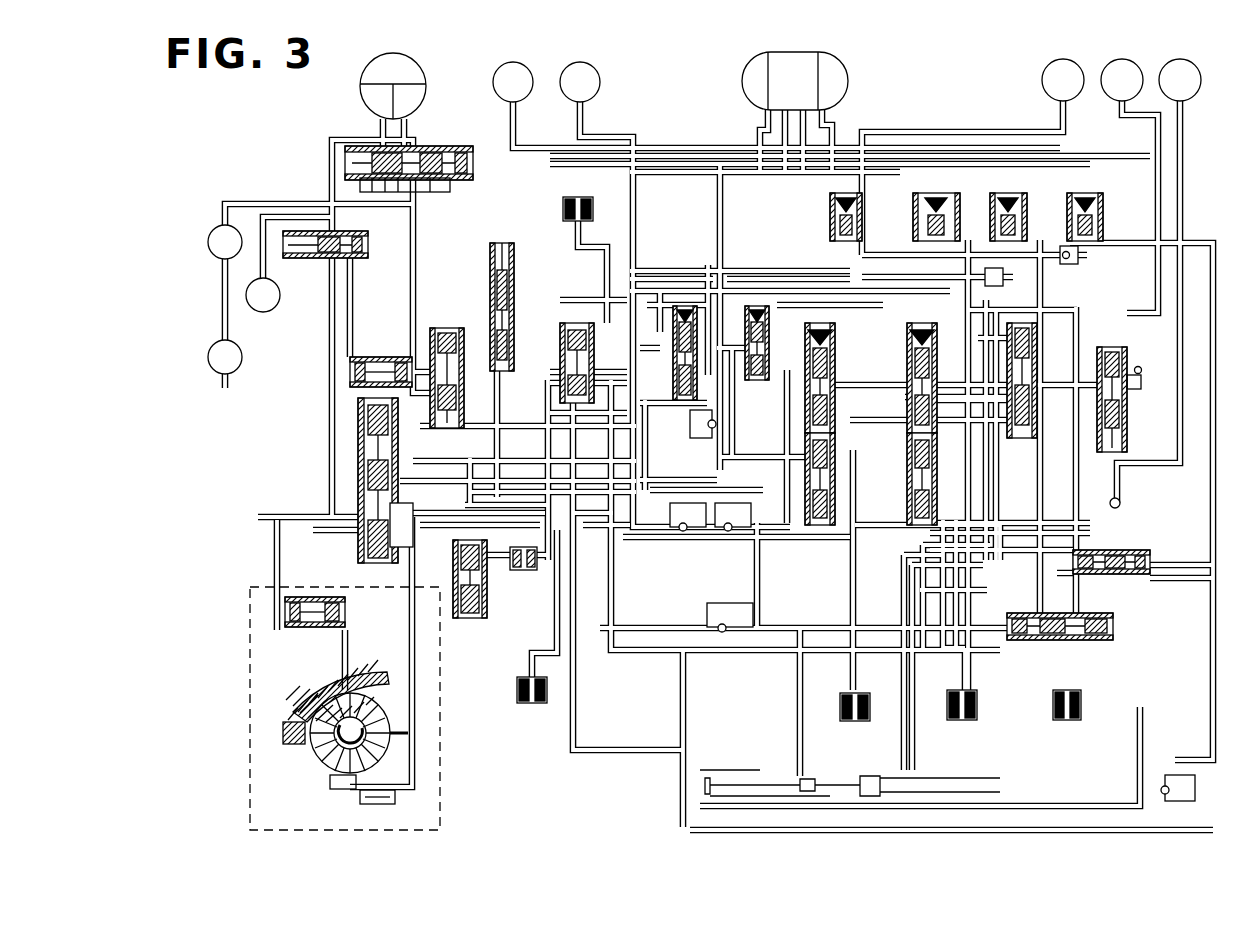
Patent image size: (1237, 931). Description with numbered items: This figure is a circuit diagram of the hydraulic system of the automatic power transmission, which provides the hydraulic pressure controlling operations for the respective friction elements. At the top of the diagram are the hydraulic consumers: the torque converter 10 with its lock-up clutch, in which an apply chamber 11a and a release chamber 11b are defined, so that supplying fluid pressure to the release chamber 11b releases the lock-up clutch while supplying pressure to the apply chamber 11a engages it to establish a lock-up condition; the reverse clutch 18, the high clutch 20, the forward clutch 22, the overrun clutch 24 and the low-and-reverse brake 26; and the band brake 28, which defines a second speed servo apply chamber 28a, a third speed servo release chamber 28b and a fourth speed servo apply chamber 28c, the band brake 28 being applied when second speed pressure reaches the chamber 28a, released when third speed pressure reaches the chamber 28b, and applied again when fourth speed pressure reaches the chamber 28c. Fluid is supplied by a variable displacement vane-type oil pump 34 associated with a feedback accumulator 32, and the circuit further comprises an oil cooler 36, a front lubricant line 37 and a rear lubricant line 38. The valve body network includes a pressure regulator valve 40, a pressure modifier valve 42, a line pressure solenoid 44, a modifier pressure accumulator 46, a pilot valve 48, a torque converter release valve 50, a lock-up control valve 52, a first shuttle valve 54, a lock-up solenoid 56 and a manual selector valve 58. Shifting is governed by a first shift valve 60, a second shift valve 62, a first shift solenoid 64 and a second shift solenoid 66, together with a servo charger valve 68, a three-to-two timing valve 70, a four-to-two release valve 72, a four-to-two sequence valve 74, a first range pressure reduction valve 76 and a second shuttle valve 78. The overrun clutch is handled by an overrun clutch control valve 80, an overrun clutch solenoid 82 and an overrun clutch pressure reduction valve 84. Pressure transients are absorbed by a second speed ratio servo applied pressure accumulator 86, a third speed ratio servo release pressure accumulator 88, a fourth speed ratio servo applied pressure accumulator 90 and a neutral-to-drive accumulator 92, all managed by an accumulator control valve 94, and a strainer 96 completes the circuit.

The torque converter 10 is at (384, 73).
The apply chamber 11a is at (413, 97).
The release chamber 11b is at (360, 100).
The reverse clutch 18 is at (519, 63).
The high clutch 20 is at (592, 63).
The forward clutch 22 is at (1071, 61).
The overrun clutch 24 is at (1129, 61).
The low-and-reverse brake 26 is at (1186, 61).
The band brake 28 is at (803, 63).
The second speed servo apply chamber 28a is at (742, 82).
The third speed servo release chamber 28b is at (795, 52).
The fourth speed servo apply chamber 28c is at (850, 84).
The feedback accumulator 32 is at (350, 623).
The variable displacement vane-type oil pump 34 is at (320, 772).
The oil cooler 36 is at (208, 243).
The front lubricant line 37 is at (273, 310).
The rear lubricant line 38 is at (210, 350).
The pressure regulator valve 40 is at (360, 544).
The pressure modifier valve 42 is at (447, 325).
The line pressure solenoid 44 is at (516, 704).
The modifier pressure accumulator 46 is at (380, 354).
The pilot valve 48 is at (490, 603).
The torque converter release valve 50 is at (358, 260).
The lock-up control valve 52 is at (470, 188).
The first shuttle valve 54 is at (684, 410).
The lock-up solenoid 56 is at (600, 209).
The manual selector valve 58 is at (937, 768).
The first shift valve 60 is at (903, 330).
The second shift valve 62 is at (836, 322).
The first shift solenoid 64 is at (980, 703).
The second shift solenoid 66 is at (874, 700).
The servo charger valve 68 is at (490, 264).
The 3-2 timing valve 70 is at (757, 385).
The 4-2 release valve 72 is at (912, 538).
The 4-2 sequence valve 74 is at (840, 505).
The first range pressure reduction valve 76 is at (1150, 553).
The second shuttle valve 78 is at (1042, 642).
The overrun clutch control valve 80 is at (1043, 422).
The overrun clutch solenoid 82 is at (1069, 723).
The overrun clutch pressure reduction valve 84 is at (1114, 345).
The second speed ratio servo applied pressure accumulator 86 is at (946, 200).
The third speed ratio servo release pressure accumulator 88 is at (1020, 197).
The fourth speed ratio servo applied pressure accumulator 90 is at (865, 208).
The N-D accumulator 92 is at (1095, 197).
The accumulator control valve 94 is at (579, 320).
The strainer 96 is at (523, 573).